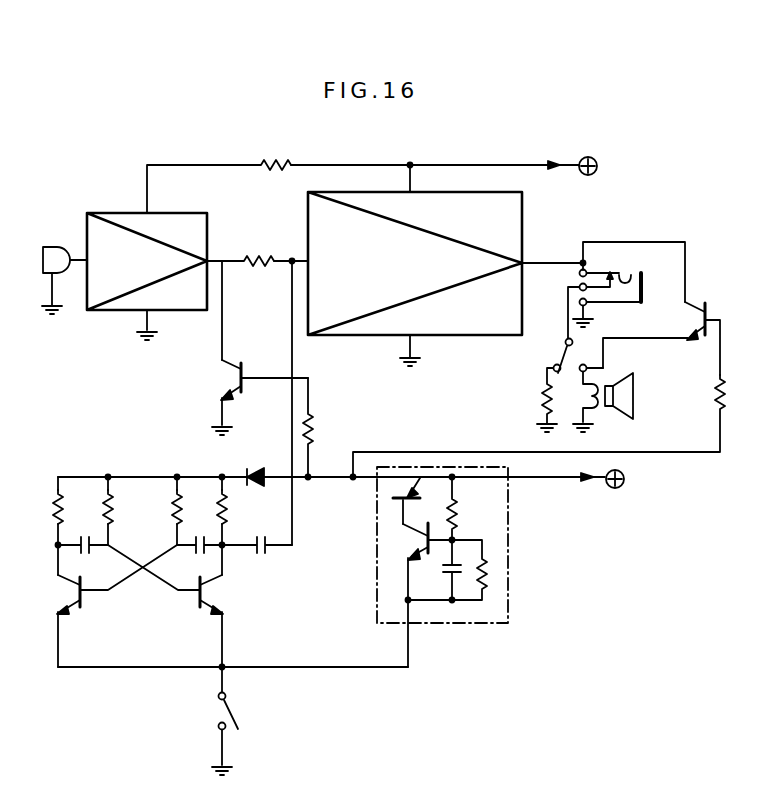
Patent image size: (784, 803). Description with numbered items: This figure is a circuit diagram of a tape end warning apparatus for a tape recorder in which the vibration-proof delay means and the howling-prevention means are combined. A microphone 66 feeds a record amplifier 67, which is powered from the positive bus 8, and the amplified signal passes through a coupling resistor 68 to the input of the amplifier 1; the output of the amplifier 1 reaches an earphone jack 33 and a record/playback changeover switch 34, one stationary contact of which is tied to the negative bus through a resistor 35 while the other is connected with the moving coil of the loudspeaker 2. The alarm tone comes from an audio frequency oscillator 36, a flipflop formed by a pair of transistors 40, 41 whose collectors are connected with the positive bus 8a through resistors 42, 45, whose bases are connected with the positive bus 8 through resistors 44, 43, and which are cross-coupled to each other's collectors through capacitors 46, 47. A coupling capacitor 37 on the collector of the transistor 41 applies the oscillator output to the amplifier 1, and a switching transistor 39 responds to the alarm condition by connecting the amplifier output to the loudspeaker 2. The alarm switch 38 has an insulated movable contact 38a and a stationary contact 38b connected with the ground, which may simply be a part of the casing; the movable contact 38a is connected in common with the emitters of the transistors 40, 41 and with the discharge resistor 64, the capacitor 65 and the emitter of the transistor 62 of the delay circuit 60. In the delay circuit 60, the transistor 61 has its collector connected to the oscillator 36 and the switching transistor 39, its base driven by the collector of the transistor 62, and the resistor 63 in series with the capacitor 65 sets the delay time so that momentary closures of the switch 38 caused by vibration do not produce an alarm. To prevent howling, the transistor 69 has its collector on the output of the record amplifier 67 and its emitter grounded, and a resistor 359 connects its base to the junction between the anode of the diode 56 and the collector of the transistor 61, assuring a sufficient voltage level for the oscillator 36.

The amplifier 1 is at (523, 209).
The loudspeaker 2 is at (633, 405).
The positive bus 8 is at (531, 164).
The positive bus 8a is at (570, 479).
The earphone jack 33 is at (628, 258).
The record/playback changeover switch 34 is at (562, 361).
The resistor 35 is at (545, 394).
The audio frequency oscillator 36 is at (230, 593).
The coupling capacitor 37 is at (258, 555).
The alarm switch 38 is at (226, 721).
The movable contact 38a is at (234, 705).
The stationary contact 38b is at (228, 728).
The switching transistor 39 is at (708, 308).
The transistor 40 is at (82, 600).
The transistor 41 is at (199, 600).
The resistor 42 is at (61, 515).
The resistor 43 is at (111, 515).
The resistor 44 is at (180, 515).
The resistor 45 is at (225, 515).
The capacitor 46 is at (86, 547).
The capacitor 47 is at (220, 547).
The diode 56 is at (253, 473).
The delay circuit 60 is at (462, 568).
The transistor 61 is at (399, 504).
The transistor 62 is at (414, 549).
The resistor 63 is at (469, 508).
The discharge resistor 64 is at (490, 571).
The capacitor 65 is at (450, 571).
The microphone 66 is at (54, 257).
The record amplifier 67 is at (195, 223).
The coupling resistor 68 is at (252, 259).
The transistor 69 is at (253, 354).
The resistor 359 is at (340, 413).